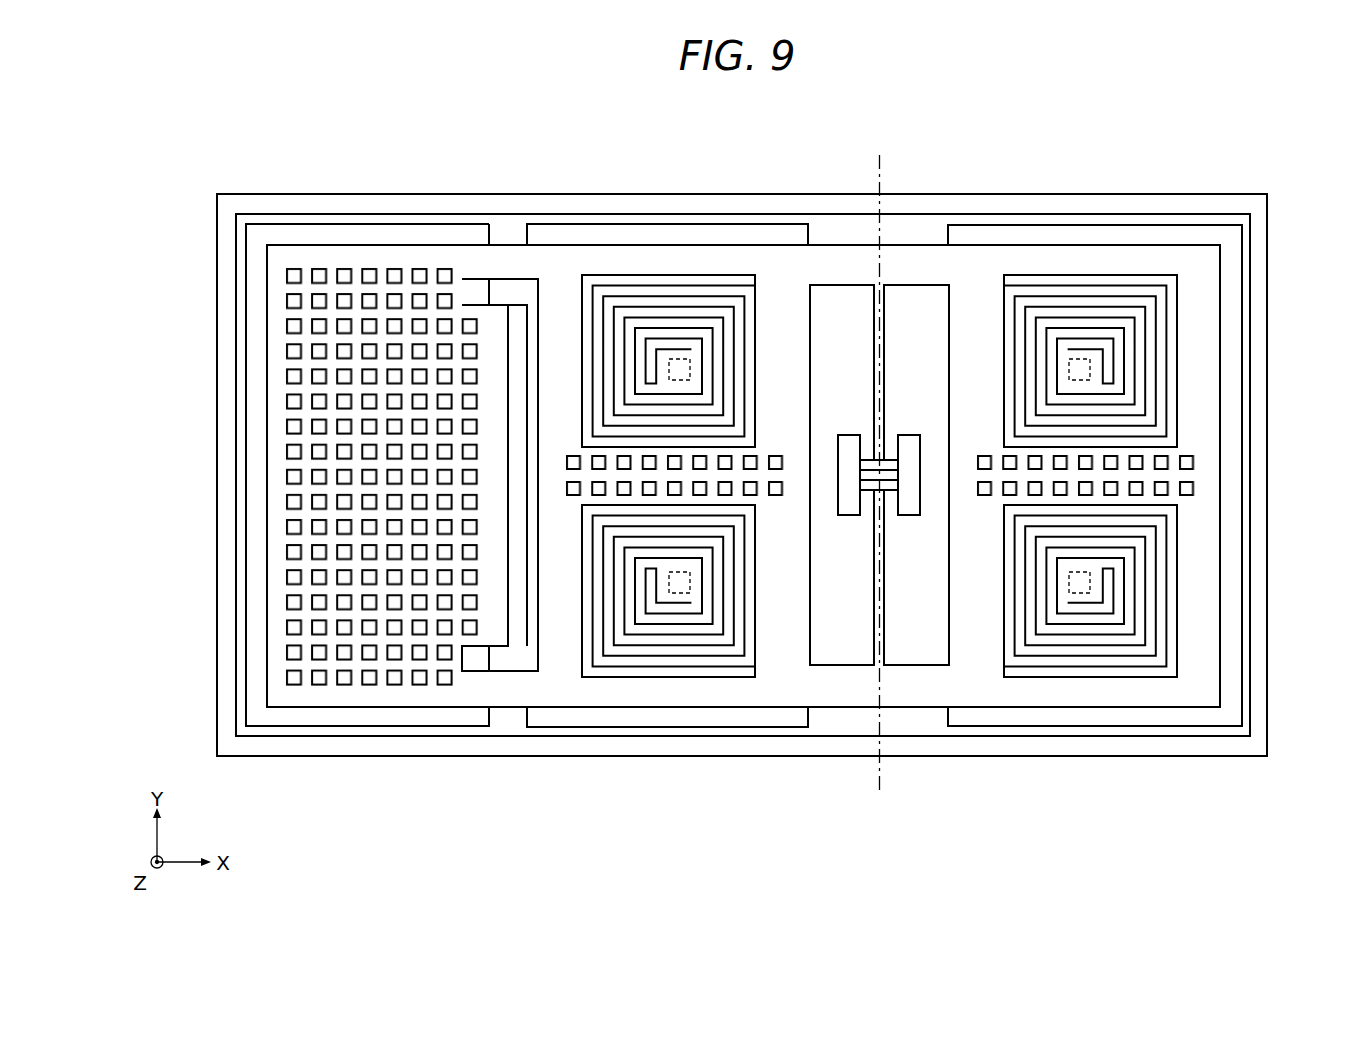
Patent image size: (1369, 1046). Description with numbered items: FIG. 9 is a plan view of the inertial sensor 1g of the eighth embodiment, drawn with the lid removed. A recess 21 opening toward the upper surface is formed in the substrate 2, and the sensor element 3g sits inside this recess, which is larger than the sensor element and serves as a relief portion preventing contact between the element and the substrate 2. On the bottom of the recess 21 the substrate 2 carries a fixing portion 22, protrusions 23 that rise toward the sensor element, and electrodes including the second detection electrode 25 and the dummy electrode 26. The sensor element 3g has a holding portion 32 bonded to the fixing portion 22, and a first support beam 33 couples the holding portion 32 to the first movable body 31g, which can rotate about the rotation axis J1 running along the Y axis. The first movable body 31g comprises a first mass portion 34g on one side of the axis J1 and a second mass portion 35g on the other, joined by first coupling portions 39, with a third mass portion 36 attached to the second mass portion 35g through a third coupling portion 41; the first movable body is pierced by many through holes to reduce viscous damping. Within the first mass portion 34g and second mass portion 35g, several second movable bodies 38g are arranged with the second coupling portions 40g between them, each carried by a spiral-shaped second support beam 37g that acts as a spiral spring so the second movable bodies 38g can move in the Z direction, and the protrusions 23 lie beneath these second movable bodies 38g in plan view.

The inertial sensor 1g is at (1210, 137).
The substrate 2 is at (977, 768).
The sensor element 3g is at (829, 234).
The recess 21 is at (841, 720).
The fixing portion 22 is at (842, 435).
The protrusion 23 is at (682, 362).
The second detection electrode 25 is at (623, 717).
The dummy electrode 26 is at (342, 712).
The first movable body 31g is at (770, 697).
The holding portion 32 is at (851, 517).
The first support beam 33 is at (885, 375).
The first mass portion 34g is at (1008, 253).
The second mass portion 35g is at (765, 242).
The third mass portion 36 is at (355, 265).
The second support beam 37g is at (591, 283).
The second movable body 38g is at (660, 349).
The first coupling portion 39 is at (918, 250).
The second coupling portion 40g is at (585, 478).
The third coupling portion 41 is at (503, 252).
The rotation axis J1 is at (892, 448).